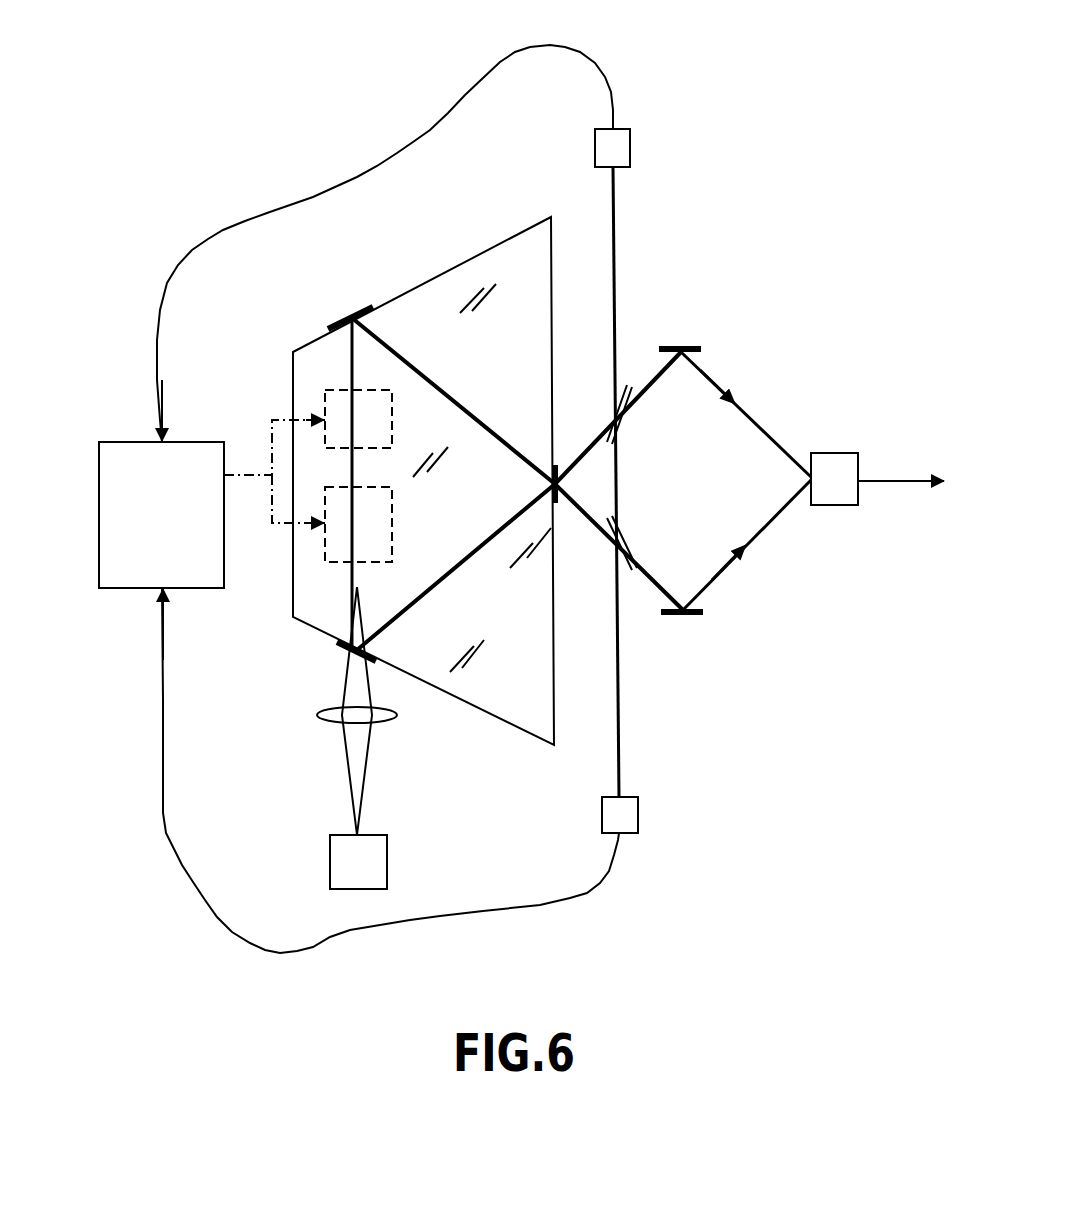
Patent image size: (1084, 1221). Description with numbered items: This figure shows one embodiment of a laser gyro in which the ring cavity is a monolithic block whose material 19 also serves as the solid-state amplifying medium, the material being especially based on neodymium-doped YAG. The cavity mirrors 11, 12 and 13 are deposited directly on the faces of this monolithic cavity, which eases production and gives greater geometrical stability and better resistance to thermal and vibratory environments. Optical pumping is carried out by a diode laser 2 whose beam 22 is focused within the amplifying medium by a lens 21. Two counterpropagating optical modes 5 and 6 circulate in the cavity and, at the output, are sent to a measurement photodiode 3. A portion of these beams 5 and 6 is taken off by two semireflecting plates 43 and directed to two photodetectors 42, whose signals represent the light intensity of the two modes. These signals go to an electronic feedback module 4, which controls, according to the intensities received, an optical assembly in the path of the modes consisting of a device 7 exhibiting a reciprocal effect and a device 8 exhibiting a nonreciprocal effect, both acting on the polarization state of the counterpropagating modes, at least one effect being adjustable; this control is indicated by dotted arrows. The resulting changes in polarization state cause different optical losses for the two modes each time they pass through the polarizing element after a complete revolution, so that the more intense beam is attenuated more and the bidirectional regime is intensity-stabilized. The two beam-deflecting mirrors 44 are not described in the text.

The diode laser 2 is at (377, 853).
The measurement photodiode 3 is at (843, 467).
The electronic feedback module 4 is at (127, 455).
The counterpropagating optical mode 5 is at (747, 402).
The counterpropagating optical mode 6 is at (750, 555).
The device exhibiting a reciprocal effect 7 is at (340, 415).
The device exhibiting a nonreciprocal effect 8 is at (338, 542).
The mirror 11 is at (350, 650).
The mirror 12 is at (340, 308).
The mirror 13 is at (552, 468).
The material of the cavity 19 is at (468, 278).
The lens 21 is at (325, 727).
The beam 22 is at (358, 675).
The photodetector 42 is at (617, 154).
The semireflecting plate 43 is at (625, 420).
The deflecting mirror 44 is at (684, 346).